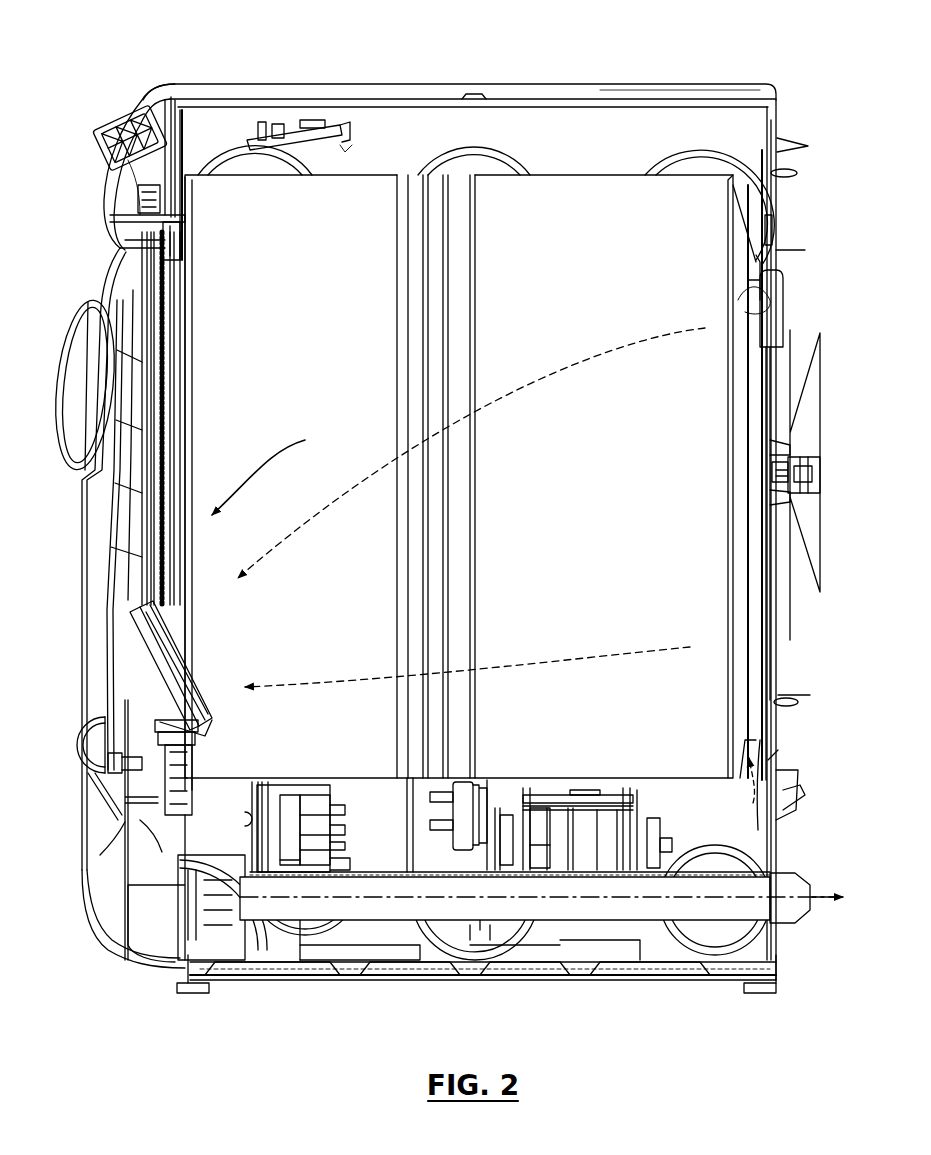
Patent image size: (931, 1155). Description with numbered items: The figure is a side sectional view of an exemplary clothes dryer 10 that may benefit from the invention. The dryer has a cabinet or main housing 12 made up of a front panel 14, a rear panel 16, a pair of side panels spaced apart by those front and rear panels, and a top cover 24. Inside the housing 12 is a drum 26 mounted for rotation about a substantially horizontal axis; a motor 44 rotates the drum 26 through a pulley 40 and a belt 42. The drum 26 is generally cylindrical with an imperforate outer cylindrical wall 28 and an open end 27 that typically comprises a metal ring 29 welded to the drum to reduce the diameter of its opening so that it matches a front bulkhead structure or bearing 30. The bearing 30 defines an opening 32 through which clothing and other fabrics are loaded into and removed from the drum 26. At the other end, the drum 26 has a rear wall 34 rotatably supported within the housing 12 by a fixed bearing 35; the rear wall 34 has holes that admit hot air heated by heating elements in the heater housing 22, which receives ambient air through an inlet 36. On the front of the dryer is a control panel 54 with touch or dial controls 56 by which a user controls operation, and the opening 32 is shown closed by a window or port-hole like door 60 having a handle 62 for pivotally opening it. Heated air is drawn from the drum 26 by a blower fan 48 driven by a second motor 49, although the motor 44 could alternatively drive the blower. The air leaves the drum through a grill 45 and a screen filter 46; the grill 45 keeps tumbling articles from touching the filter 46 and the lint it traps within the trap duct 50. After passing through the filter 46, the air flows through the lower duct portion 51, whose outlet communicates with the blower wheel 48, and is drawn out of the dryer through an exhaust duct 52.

The clothes dryer 10 is at (444, 68).
The main housing 12 is at (356, 115).
The front panel 14 is at (96, 787).
The rear panel 16 is at (777, 118).
The heater housing 22 is at (760, 350).
The top cover 24 is at (493, 90).
The drum 26 is at (571, 200).
The open end 27 is at (190, 170).
The outer cylindrical wall 28 is at (630, 175).
The metal ring 29 is at (192, 216).
The bearing 30 is at (181, 250).
The opening 32 is at (273, 472).
The rear wall 34 is at (772, 300).
The fixed bearing 35 is at (824, 498).
The inlet 36 is at (763, 745).
The pulley 40 is at (460, 840).
The belt 42 is at (445, 760).
The motor 44 is at (585, 862).
The grill 45 is at (203, 667).
The screen filter 46 is at (152, 650).
The blower fan 48 is at (215, 928).
The second motor 49 is at (300, 880).
The trap duct 50 is at (115, 732).
The lower duct portion 51 is at (130, 850).
The exhaust duct 52 is at (630, 905).
The control panel 54 is at (140, 100).
The controls 56 is at (102, 140).
The door 60 is at (62, 524).
The handle 62 is at (70, 325).